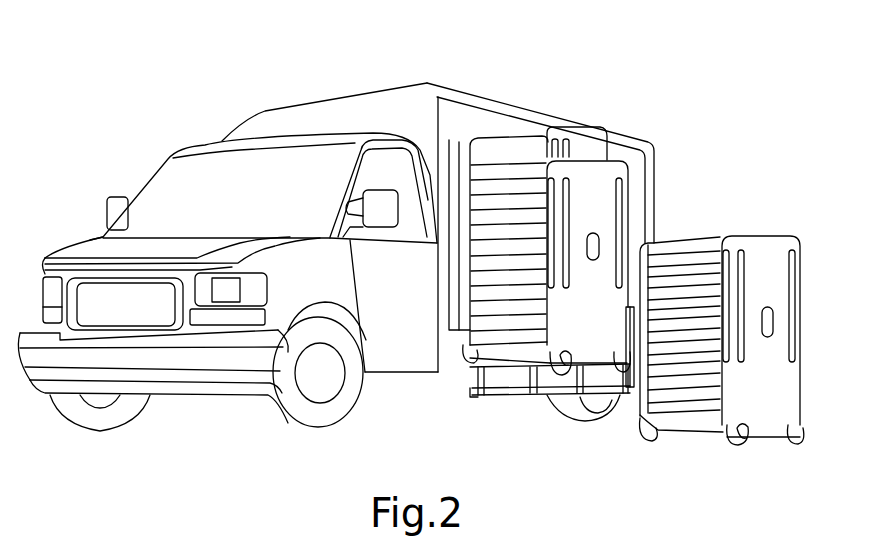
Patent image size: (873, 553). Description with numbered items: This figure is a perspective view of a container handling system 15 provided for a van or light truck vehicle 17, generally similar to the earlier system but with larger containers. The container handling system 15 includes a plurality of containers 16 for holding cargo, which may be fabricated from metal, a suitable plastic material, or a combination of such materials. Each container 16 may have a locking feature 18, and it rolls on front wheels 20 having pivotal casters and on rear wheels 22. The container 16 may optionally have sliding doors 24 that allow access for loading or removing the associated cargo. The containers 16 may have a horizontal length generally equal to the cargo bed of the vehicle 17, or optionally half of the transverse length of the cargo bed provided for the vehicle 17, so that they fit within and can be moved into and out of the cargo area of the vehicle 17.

The container handling system 15 is at (526, 70).
The container 16 is at (608, 158).
The van or light truck vehicle 17 is at (208, 143).
The locking feature 18 is at (773, 324).
The front wheels 20 is at (643, 433).
The rear wheels 22 is at (798, 443).
The sliding doors 24 is at (513, 180).